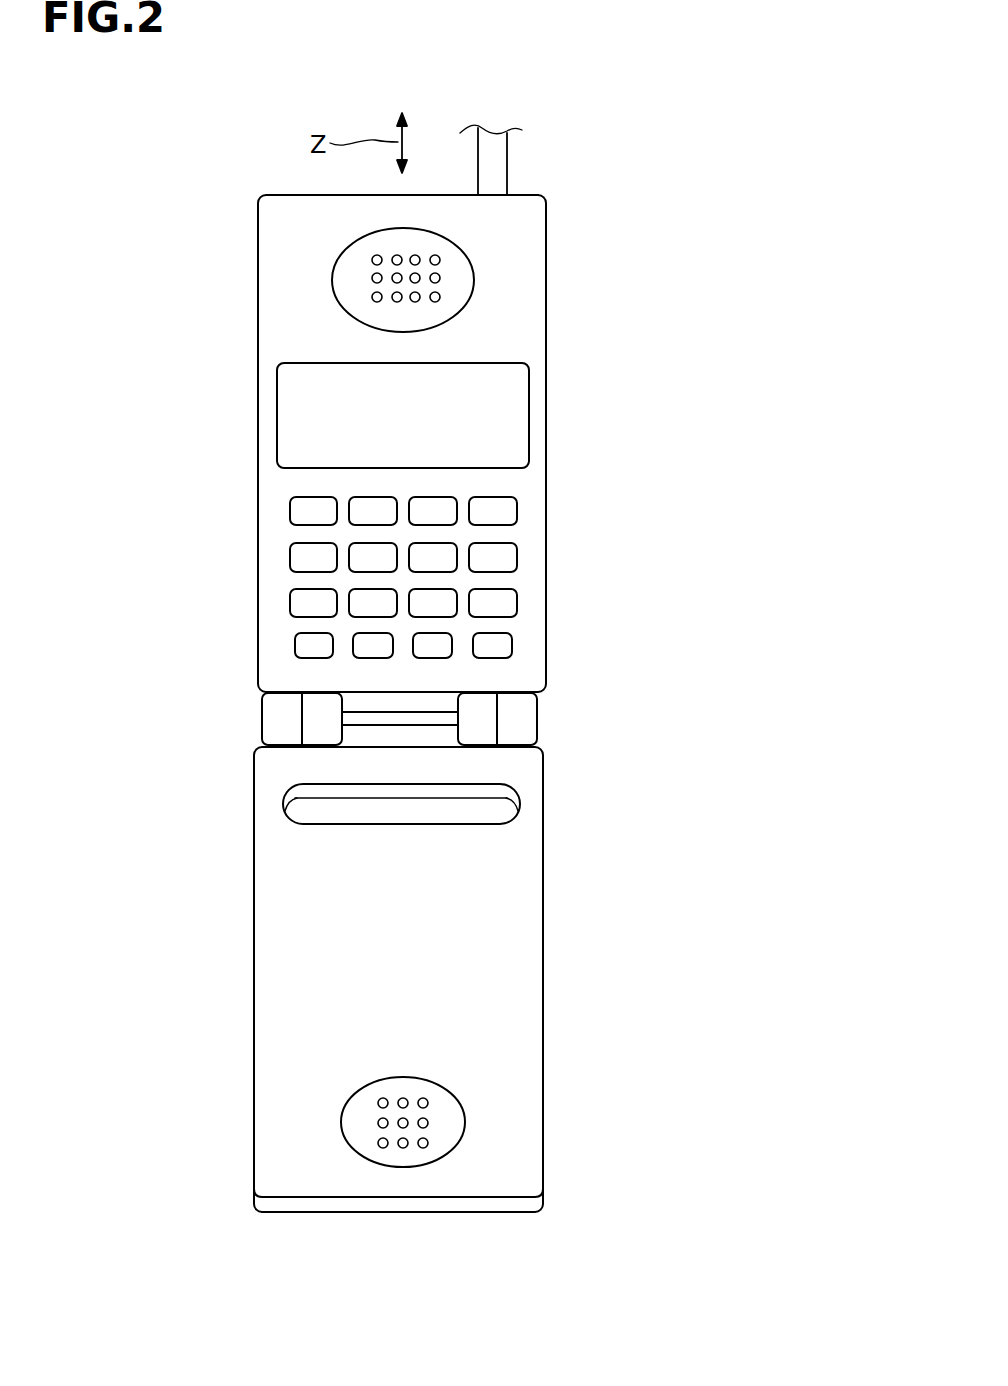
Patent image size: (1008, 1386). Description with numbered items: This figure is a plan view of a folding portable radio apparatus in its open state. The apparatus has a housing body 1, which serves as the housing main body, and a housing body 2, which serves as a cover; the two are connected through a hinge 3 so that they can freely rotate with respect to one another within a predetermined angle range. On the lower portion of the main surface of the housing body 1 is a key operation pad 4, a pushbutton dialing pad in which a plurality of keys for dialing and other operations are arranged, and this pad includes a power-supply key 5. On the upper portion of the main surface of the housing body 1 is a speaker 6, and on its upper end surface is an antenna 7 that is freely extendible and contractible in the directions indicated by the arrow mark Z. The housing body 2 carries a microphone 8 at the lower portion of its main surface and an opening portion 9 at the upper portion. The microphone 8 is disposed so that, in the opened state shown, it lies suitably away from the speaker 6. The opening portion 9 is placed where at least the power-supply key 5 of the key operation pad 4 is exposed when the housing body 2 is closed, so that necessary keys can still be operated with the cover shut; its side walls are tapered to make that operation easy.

The housing body 1 is at (258, 307).
The housing body 2 is at (527, 912).
The hinge 3 is at (602, 715).
The key operation pad 4 is at (290, 538).
The power-supply key 5 is at (510, 647).
The speaker 6 is at (455, 273).
The antenna 7 is at (497, 155).
The microphone 8 is at (443, 1130).
The opening portion 9 is at (485, 807).